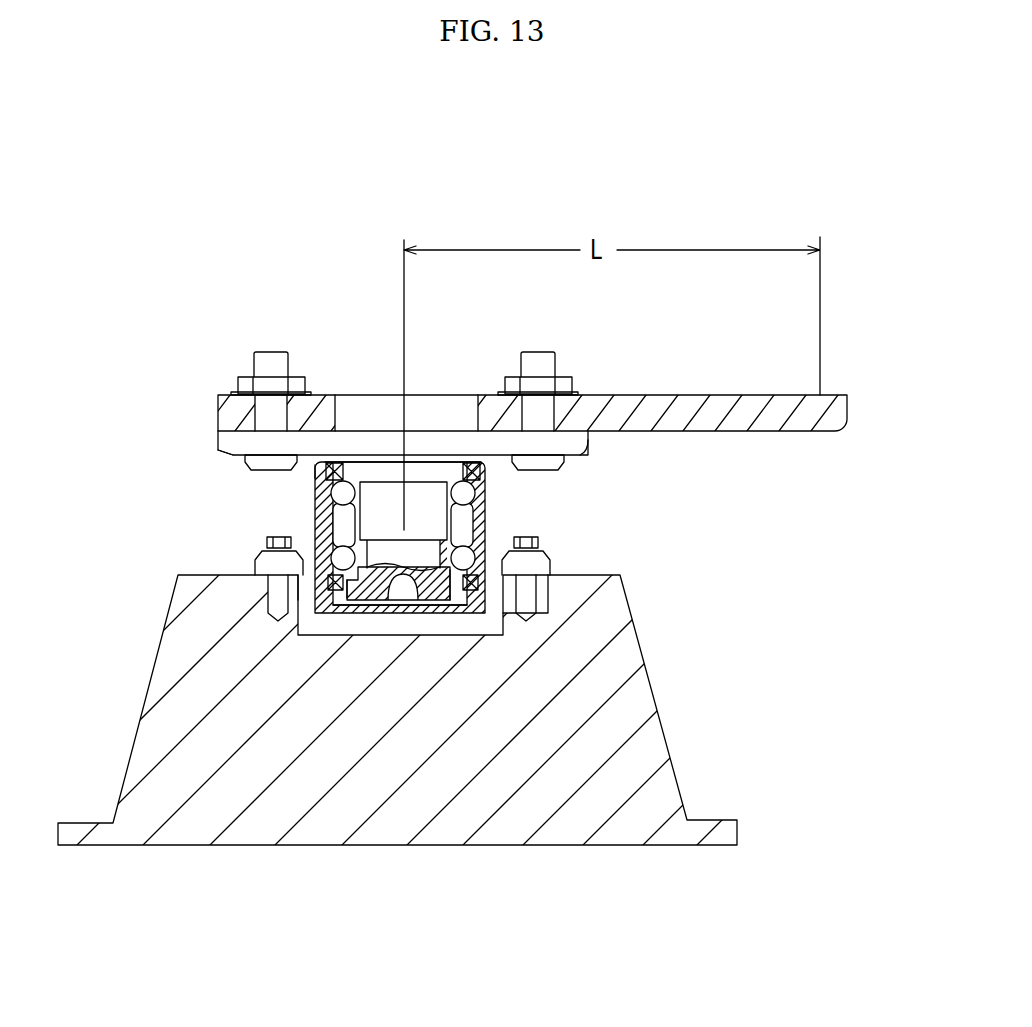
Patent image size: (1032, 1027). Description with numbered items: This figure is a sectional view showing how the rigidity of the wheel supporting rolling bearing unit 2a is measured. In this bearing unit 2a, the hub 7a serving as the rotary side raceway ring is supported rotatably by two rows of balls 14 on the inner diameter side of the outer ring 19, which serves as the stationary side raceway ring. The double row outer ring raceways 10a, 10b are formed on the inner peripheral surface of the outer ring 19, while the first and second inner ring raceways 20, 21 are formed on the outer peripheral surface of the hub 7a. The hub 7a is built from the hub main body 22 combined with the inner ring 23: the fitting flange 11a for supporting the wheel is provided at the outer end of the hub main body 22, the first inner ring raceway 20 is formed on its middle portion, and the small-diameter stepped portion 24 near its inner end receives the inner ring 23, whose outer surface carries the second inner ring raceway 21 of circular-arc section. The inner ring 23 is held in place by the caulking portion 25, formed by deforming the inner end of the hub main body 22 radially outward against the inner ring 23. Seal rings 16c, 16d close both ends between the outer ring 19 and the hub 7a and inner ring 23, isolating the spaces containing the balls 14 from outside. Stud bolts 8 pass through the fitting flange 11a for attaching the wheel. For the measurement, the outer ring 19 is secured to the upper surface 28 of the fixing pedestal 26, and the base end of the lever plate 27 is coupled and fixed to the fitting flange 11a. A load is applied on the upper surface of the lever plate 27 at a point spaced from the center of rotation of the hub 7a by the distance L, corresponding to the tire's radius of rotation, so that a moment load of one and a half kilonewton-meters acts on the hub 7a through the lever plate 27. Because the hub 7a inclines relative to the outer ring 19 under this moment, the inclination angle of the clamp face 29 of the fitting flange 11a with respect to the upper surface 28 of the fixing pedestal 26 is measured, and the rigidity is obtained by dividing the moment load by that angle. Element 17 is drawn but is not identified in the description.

The wheel supporting rolling bearing unit 2a is at (514, 511).
The hub 7a is at (428, 472).
The stud bolts 8 is at (269, 360).
The outer ring raceway 10a is at (318, 492).
The outer ring raceway 10b is at (300, 577).
The fitting flange 11a is at (240, 446).
The balls 14 is at (338, 548).
The seal ring 16c is at (341, 462).
The seal ring 16d is at (482, 600).
The housing bottom 17 is at (398, 618).
The outer ring 19 is at (256, 562).
The first inner ring raceway 20 is at (460, 478).
The second inner ring raceway 21 is at (465, 592).
The hub main body 22 is at (390, 485).
The inner ring 23 is at (345, 585).
The small-diameter stepped portion 24 is at (375, 600).
The caulking portion 25 is at (440, 598).
The fixing pedestal 26 is at (625, 697).
The lever plate 27 is at (738, 410).
The upper surface 28 is at (595, 575).
The clamp face 29 is at (590, 426).